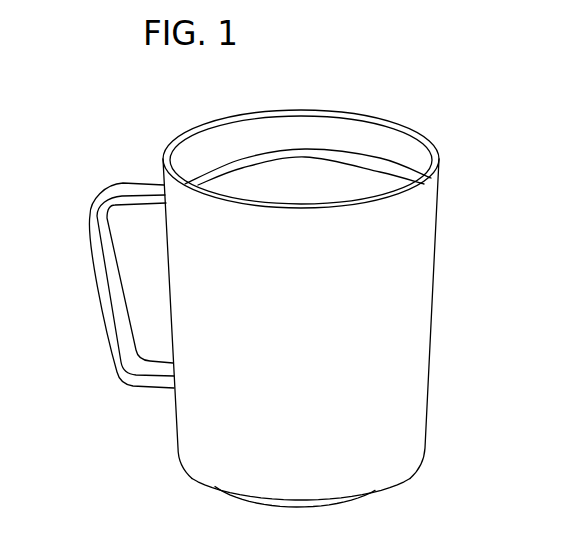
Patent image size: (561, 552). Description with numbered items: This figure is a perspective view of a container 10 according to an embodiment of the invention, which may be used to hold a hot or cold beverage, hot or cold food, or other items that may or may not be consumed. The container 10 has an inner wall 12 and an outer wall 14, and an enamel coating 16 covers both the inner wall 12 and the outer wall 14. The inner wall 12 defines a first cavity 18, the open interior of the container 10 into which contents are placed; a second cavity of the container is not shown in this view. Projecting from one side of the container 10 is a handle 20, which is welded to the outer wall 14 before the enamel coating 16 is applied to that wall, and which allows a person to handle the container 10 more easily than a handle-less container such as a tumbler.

The container 10 is at (447, 99).
The inner wall 12 is at (305, 186).
The outer wall 14 is at (420, 267).
The enamel coating 16 is at (362, 195).
The first cavity 18 is at (254, 174).
The handle 20 is at (90, 220).